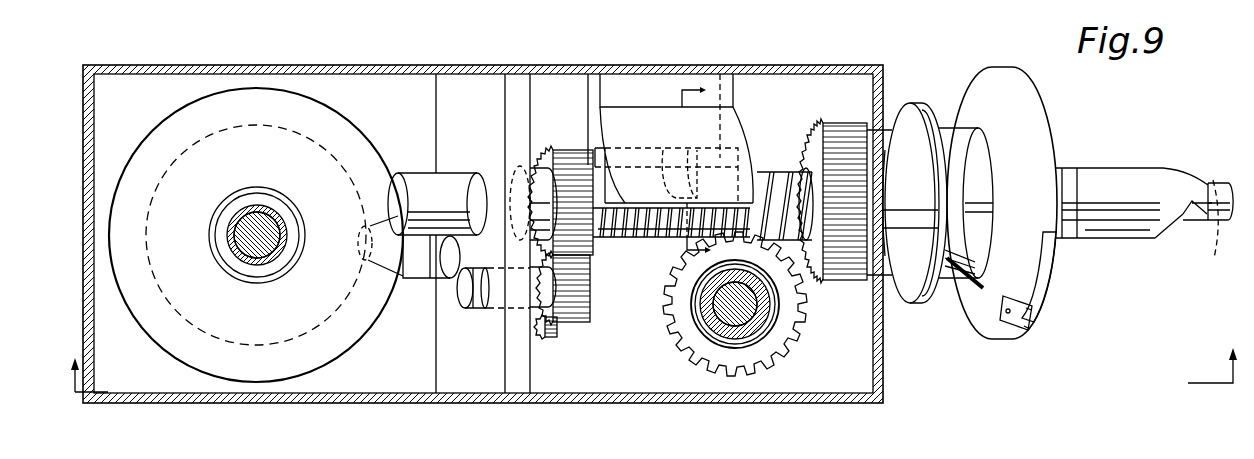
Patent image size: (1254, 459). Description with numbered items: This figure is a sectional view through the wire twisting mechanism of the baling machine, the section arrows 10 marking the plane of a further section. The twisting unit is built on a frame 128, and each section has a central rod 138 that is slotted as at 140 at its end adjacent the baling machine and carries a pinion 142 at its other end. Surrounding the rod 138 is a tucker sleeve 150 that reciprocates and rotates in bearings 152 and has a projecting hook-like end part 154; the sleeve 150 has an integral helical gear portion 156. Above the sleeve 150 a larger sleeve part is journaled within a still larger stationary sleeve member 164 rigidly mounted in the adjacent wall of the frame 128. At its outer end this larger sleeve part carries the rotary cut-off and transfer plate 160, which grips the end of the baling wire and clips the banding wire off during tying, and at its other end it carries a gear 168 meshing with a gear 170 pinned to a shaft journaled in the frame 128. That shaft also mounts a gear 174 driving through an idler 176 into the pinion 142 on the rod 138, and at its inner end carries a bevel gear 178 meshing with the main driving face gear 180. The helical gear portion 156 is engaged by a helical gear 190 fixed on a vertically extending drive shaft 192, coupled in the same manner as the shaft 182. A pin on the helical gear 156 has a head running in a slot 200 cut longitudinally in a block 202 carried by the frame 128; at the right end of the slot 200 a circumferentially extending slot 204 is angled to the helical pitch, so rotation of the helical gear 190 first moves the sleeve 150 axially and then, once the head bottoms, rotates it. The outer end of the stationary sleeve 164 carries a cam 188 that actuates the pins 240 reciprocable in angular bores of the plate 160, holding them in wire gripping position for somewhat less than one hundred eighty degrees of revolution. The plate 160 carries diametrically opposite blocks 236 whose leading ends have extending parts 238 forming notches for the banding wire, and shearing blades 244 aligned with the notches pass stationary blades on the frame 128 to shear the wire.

The device 10 is at (655, 386).
The frame 128 is at (657, 404).
The central rod 138 is at (1210, 183).
The slot 140 is at (1212, 229).
The pinion 142 is at (557, 148).
The sleeve 150 is at (1144, 199).
The bearings 152 is at (1062, 168).
The hook-like end part 154 is at (1202, 216).
The helical gear portion 156 is at (645, 237).
The rotary cut-off and transfer plate 160 is at (975, 318).
The sleeve member 164 is at (896, 298).
The gear 168 is at (830, 123).
The gear 170 is at (766, 240).
The gear 174 is at (552, 337).
The idler 176 is at (590, 290).
The bevel gear 178 is at (390, 283).
The main driving face gear 180 is at (266, 97).
The shaft 182 is at (247, 240).
The cam 188 is at (930, 200).
The helical gear 190 is at (805, 318).
The drive shaft 192 is at (765, 300).
The slot 200 is at (635, 160).
The block 202 is at (685, 167).
The circumferentially extending slot 204 is at (666, 165).
The blocks 236 is at (1058, 263).
The extending part 238 is at (1028, 323).
The pins 240 is at (970, 290).
The shearing blades 244 is at (1020, 328).